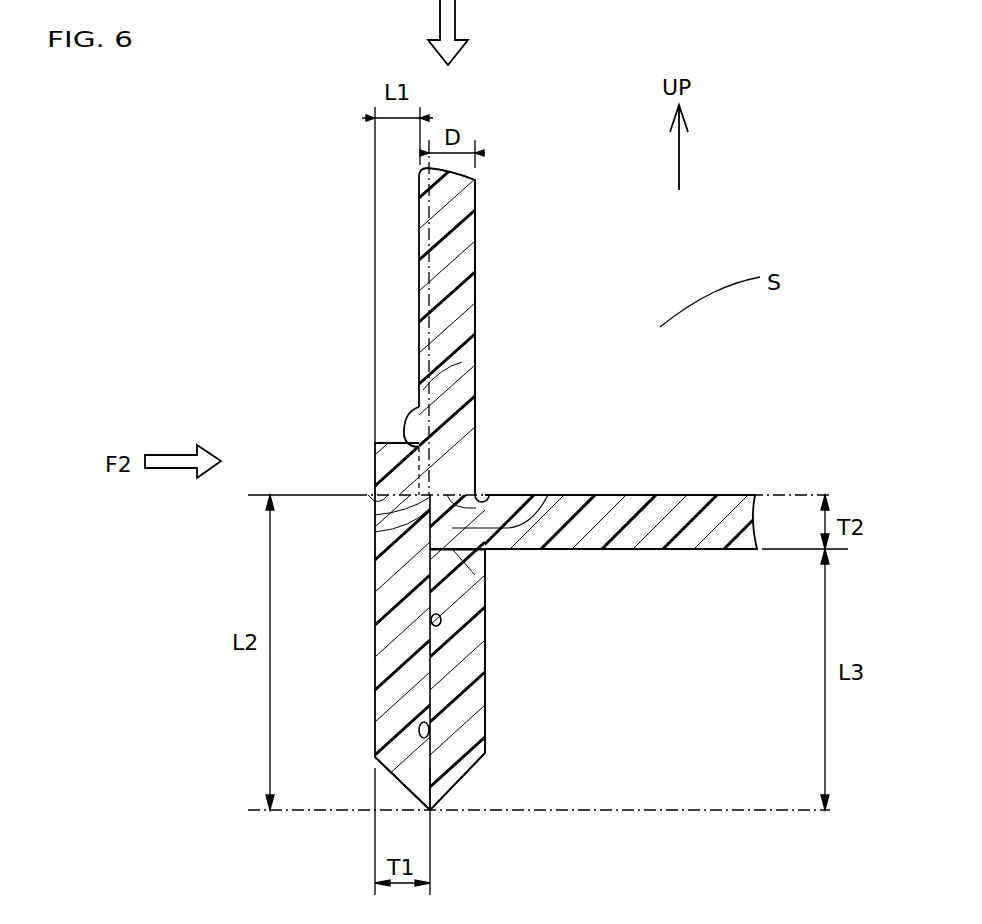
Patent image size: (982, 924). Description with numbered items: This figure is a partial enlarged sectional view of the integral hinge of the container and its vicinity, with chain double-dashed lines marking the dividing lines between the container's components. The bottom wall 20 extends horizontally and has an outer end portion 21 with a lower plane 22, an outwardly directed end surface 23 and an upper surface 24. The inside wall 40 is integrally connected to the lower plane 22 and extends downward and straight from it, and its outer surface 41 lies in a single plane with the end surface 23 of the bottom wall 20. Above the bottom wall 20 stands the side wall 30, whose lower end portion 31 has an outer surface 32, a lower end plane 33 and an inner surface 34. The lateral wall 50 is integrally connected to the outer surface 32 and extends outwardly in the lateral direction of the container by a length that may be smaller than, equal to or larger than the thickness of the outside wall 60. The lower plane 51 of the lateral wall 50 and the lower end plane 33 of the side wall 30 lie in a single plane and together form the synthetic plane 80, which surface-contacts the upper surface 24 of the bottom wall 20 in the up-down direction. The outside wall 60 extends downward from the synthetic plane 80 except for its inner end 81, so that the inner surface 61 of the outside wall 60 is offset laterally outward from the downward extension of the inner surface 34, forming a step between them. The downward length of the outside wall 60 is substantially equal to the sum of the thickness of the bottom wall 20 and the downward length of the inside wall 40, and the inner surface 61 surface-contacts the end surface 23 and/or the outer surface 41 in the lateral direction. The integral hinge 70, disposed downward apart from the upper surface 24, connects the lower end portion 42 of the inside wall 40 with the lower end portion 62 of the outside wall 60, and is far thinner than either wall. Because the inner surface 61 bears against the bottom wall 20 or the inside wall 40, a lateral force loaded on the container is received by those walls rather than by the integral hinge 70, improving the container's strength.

The bottom wall 20 is at (619, 493).
The outer end portion 21 is at (555, 495).
The lower plane 22 is at (488, 583).
The outwardly directed end surface 23 is at (517, 508).
The upper surface 24 is at (667, 495).
The side wall 30 is at (462, 237).
The lower end portion 31 is at (455, 465).
The outer surface 32 is at (476, 357).
The lower end plane 33 is at (378, 533).
The inner surface 34 is at (475, 290).
The inside wall 40 is at (473, 658).
The outer surface 41 is at (432, 740).
The lower end portion 42 is at (453, 773).
The lateral wall 50 is at (395, 460).
The lower plane 51 is at (372, 505).
The outside wall 60 is at (388, 700).
The inner surface 61 is at (430, 630).
The lower end portion 62 is at (405, 772).
The integral hinge 70 is at (432, 805).
The synthetic plane 80 is at (405, 502).
The inner end 81 is at (490, 494).